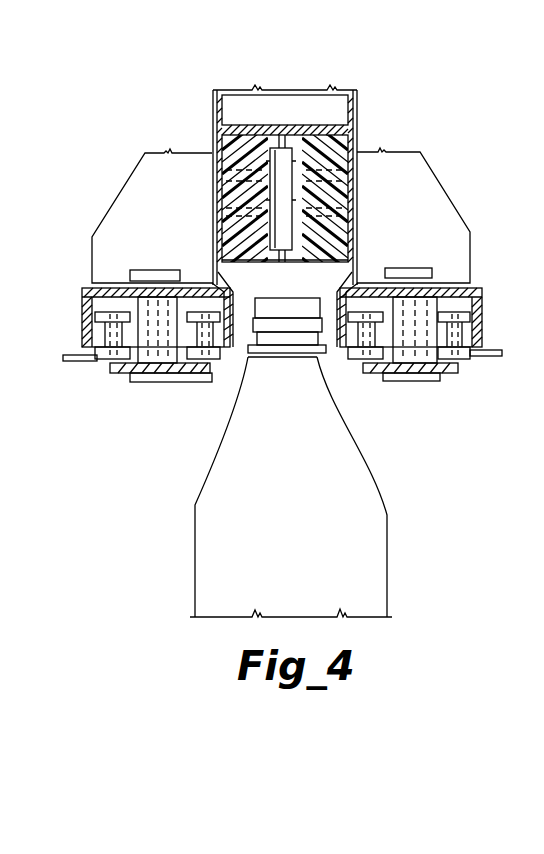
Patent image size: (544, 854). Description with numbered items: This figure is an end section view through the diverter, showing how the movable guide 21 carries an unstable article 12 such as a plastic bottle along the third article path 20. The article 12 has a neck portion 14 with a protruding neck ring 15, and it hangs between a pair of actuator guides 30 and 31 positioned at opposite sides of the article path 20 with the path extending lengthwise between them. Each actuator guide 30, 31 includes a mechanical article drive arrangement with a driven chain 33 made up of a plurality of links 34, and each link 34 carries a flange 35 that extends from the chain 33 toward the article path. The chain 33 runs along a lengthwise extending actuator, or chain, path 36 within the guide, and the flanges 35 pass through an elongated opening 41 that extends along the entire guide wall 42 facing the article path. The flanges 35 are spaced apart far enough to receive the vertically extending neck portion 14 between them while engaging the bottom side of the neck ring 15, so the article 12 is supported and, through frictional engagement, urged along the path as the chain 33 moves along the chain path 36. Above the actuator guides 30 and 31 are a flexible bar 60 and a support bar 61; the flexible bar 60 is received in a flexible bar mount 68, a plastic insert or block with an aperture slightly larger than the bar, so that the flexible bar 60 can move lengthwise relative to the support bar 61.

The article 12 is at (360, 548).
The neck portion 14 is at (278, 358).
The neck ring 15 is at (298, 360).
The third article path 20 is at (262, 360).
The movable guide 21 is at (425, 162).
The actuator guide 30 is at (197, 312).
The actuator guide 31 is at (373, 307).
The driven chain 33 is at (185, 378).
The link 34 is at (203, 377).
The actuator path 36 is at (185, 277).
The elongated opening 41 is at (208, 375).
The flange 35 is at (227, 360).
The guide wall 42 is at (230, 312).
The flexible bar 60 is at (280, 168).
The support bar 61 is at (237, 102).
The flexible bar mount 68 is at (230, 153).